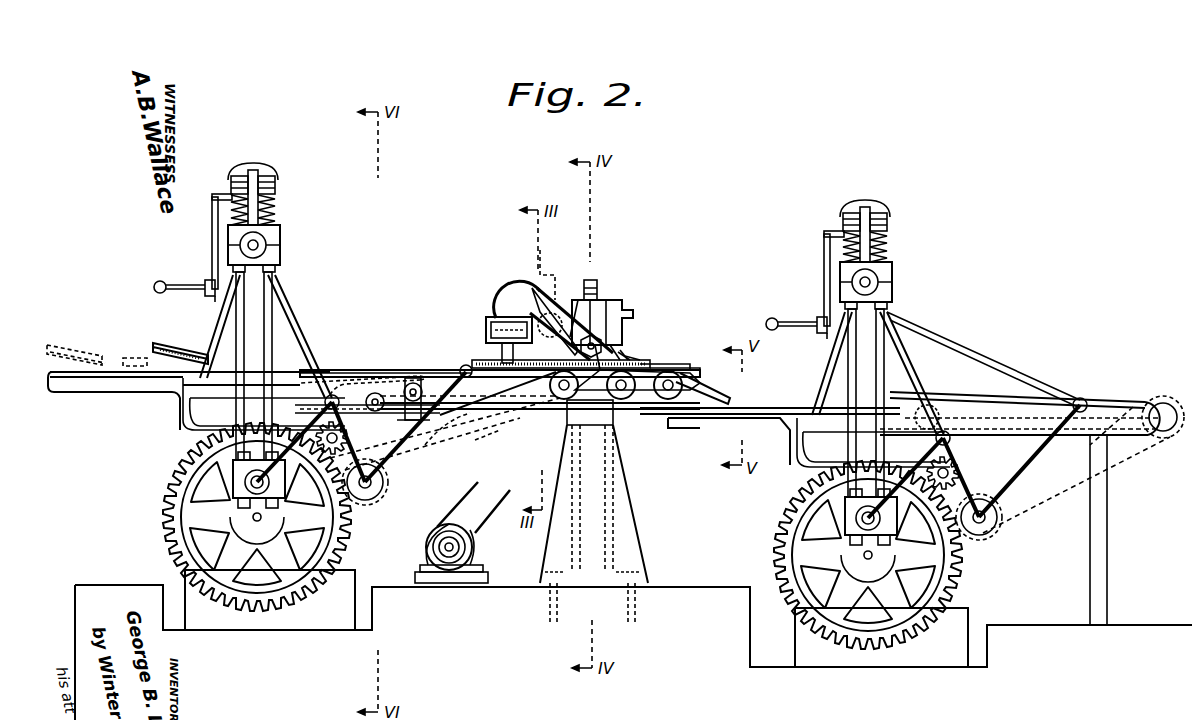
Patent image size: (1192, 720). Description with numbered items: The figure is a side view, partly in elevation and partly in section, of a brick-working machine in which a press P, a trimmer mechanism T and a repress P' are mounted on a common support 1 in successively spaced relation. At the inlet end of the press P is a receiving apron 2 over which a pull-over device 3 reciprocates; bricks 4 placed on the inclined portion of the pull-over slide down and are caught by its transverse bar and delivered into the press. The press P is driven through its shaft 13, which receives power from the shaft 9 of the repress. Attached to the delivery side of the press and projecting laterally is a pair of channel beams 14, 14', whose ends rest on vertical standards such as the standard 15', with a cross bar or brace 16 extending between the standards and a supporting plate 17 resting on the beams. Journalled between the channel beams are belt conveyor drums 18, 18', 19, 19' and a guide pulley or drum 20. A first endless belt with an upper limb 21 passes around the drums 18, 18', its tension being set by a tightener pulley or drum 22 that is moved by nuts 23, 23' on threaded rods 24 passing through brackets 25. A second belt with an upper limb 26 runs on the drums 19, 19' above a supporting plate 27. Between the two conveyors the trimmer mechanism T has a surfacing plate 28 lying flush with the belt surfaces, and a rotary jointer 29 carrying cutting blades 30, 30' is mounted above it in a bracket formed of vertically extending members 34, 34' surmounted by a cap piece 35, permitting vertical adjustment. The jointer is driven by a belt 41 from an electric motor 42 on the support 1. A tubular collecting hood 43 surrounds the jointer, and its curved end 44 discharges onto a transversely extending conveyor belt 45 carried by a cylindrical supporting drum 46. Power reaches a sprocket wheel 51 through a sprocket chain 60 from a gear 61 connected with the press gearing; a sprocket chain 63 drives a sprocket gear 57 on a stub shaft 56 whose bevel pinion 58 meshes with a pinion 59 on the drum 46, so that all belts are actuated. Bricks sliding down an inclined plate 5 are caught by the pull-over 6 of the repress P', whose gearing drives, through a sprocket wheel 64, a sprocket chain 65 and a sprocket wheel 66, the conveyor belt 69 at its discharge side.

The support 1 is at (132, 585).
The receiving apron 2 is at (125, 378).
The pull-over device 3 is at (55, 362).
The bricks 4 is at (197, 342).
The inclined plate 5 is at (780, 375).
The pull-over of the repress 6 is at (938, 400).
The shaft of the repress 9 is at (958, 472).
The shaft of the press 13 is at (352, 413).
The channel beam 14 is at (648, 438).
The channel beam 14' is at (362, 318).
The vertical standard 15' is at (578, 542).
The cross bar or brace 16 is at (580, 425).
The supporting plate 17 is at (462, 360).
The belt conveyor drum 18 is at (386, 327).
The belt conveyor drum 18' is at (471, 421).
The belt conveyor drum 19 is at (604, 428).
The belt conveyor drum 19' is at (669, 413).
The guide pulley or drum 20 is at (408, 378).
The upper limb of endless belt conveyor 21 is at (484, 528).
The tightener pulley or drum 22 is at (432, 380).
The nut 23 is at (445, 431).
The nut 23' is at (448, 432).
The rod 24 is at (485, 437).
The bracket 25 is at (432, 445).
The upper limb of second conveyor belt 26 is at (683, 366).
The supporting plate 27 is at (670, 405).
The surfacing plate 28 is at (640, 420).
The rotary jointer 29 is at (625, 356).
The cutting blade 30 is at (654, 293).
The cutting blade 30' is at (678, 312).
The vertically extending member 34 is at (636, 248).
The vertically extending member 34' is at (679, 260).
The cap piece 35 is at (612, 335).
The belt 41 is at (488, 520).
The electric motor 42 is at (430, 578).
The tubular collecting hood 43 is at (585, 275).
The curved end of hood 44 is at (508, 295).
The transversely extending conveyor belt 45 is at (492, 312).
The cylindrical supporting drum 46 is at (487, 322).
The sprocket wheel 51 is at (690, 366).
The stub shaft 56 is at (581, 345).
The sprocket gear 57 is at (553, 315).
The bevel pinion 58 is at (548, 325).
The pinion 59 is at (520, 330).
The sprocket chain 60 is at (440, 475).
The gear 61 is at (370, 498).
The sprocket chain 63 is at (677, 366).
The sprocket wheel 64 is at (985, 530).
The sprocket chain 65 is at (1138, 450).
The sprocket wheel 66 is at (1138, 395).
The conveyor belt 69 is at (1160, 395).
The press P is at (266, 295).
The repress P' is at (878, 330).
The trimmer mechanism T is at (597, 280).